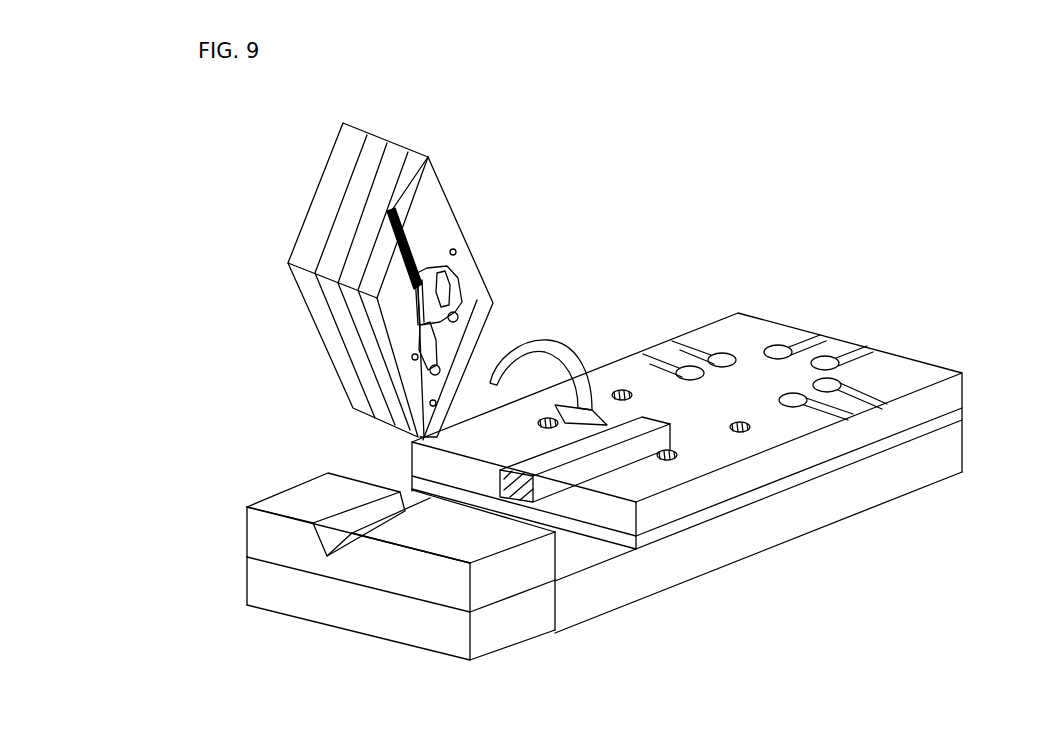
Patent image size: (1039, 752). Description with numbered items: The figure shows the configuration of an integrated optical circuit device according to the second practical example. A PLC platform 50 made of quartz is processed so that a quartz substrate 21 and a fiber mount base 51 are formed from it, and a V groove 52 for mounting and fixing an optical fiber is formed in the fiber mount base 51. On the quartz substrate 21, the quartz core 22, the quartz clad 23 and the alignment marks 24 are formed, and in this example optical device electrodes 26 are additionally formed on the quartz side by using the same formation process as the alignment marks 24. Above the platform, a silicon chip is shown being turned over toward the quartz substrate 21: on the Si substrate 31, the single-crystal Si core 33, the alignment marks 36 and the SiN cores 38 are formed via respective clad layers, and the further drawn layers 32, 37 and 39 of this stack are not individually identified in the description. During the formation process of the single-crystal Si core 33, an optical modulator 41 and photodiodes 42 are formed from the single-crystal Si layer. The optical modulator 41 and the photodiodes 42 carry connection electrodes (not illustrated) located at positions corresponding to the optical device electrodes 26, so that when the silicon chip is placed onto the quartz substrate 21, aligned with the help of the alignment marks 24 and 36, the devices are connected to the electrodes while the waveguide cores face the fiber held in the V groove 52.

The quartz substrate 21 is at (964, 422).
The quartz core 22 is at (558, 492).
The quartz clad 23 is at (964, 390).
The alignment marks 24 is at (553, 430).
The optical device electrodes 26 is at (780, 343).
The Si substrate 31 is at (350, 132).
The second layer 32 is at (378, 134).
The single-crystal Si core 33 is at (428, 273).
The alignment marks 36 is at (456, 250).
The third layer 37 is at (393, 148).
The SiN cores 38 is at (393, 212).
The plate 39 is at (452, 208).
The optical modulator 41 is at (455, 283).
The photodiodes 42 is at (462, 313).
The PLC platform 50 is at (390, 642).
The fiber mount base 51 is at (253, 535).
The V groove 52 is at (327, 558).